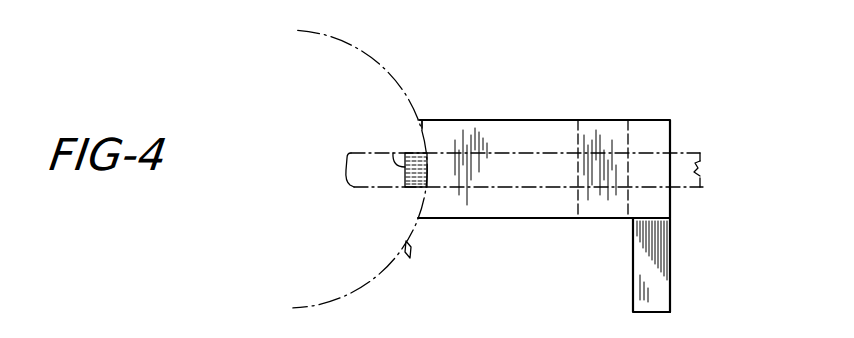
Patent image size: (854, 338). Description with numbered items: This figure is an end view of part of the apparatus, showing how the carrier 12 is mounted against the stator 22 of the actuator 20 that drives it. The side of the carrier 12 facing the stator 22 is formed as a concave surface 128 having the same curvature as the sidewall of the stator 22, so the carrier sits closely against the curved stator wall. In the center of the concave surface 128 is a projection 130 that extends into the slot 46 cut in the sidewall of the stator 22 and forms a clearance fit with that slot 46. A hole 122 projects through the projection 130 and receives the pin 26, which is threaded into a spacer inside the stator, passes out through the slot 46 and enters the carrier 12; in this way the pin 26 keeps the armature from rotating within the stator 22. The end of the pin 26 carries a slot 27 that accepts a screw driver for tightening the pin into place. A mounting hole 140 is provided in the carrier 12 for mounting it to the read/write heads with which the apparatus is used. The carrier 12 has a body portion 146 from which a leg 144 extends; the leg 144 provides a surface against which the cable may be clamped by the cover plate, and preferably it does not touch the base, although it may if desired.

The carrier 12 is at (648, 72).
The actuator 20 is at (411, 259).
The stator 22 is at (397, 80).
The pin 26 is at (684, 148).
The slot 27 is at (702, 166).
The slot 46 is at (400, 152).
The hole 122 is at (509, 180).
The surface 128 is at (420, 133).
The projection 130 is at (416, 192).
The mounting hole 140 is at (628, 135).
The leg 144 is at (633, 262).
The body portion 146 is at (506, 137).